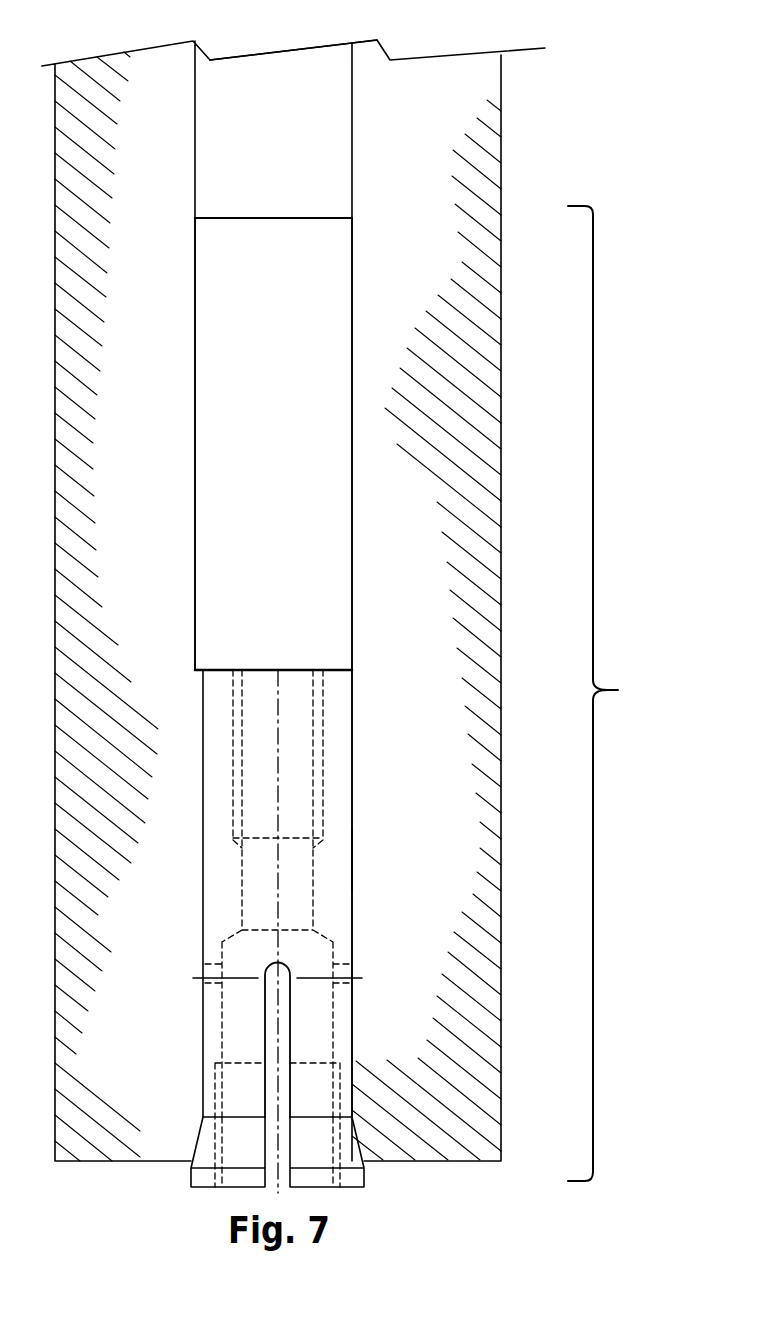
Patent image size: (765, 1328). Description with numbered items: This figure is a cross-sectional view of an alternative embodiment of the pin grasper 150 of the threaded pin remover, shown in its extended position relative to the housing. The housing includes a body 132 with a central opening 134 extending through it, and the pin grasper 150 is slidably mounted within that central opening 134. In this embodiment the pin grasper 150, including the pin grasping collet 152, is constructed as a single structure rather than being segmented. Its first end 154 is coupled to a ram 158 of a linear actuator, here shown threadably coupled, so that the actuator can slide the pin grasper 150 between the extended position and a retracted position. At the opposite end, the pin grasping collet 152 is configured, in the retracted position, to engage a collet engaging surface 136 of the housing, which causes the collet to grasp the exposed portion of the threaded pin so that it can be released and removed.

The body 132 is at (463, 448).
The central opening 134 is at (353, 877).
The collet engaging surface 136 is at (180, 1125).
The pin grasper 150 is at (616, 693).
The pin grasping collet 152 is at (372, 787).
The first end 154 is at (203, 255).
The ram 158 is at (312, 113).